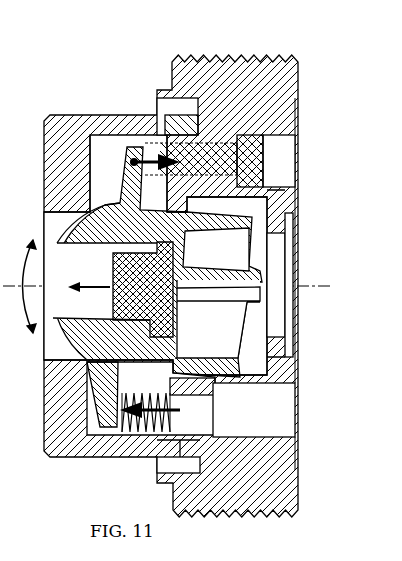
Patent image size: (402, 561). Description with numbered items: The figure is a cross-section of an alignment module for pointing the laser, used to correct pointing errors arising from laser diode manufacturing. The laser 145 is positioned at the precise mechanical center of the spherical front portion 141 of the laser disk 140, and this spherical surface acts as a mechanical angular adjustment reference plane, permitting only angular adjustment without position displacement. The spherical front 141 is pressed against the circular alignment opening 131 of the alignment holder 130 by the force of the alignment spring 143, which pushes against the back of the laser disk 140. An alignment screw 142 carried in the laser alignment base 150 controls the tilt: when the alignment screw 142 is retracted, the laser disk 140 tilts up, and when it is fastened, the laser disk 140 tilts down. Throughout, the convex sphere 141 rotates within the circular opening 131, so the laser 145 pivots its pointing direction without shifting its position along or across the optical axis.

The alignment holder 130 is at (65, 130).
The circular alignment opening 131 is at (85, 364).
The laser disk 140 is at (113, 220).
The spherical front portion 141 is at (90, 208).
The alignment screw 142 is at (225, 157).
The alignment spring 143 is at (152, 422).
The laser source 145 is at (166, 277).
The laser alignment base 150 is at (277, 90).